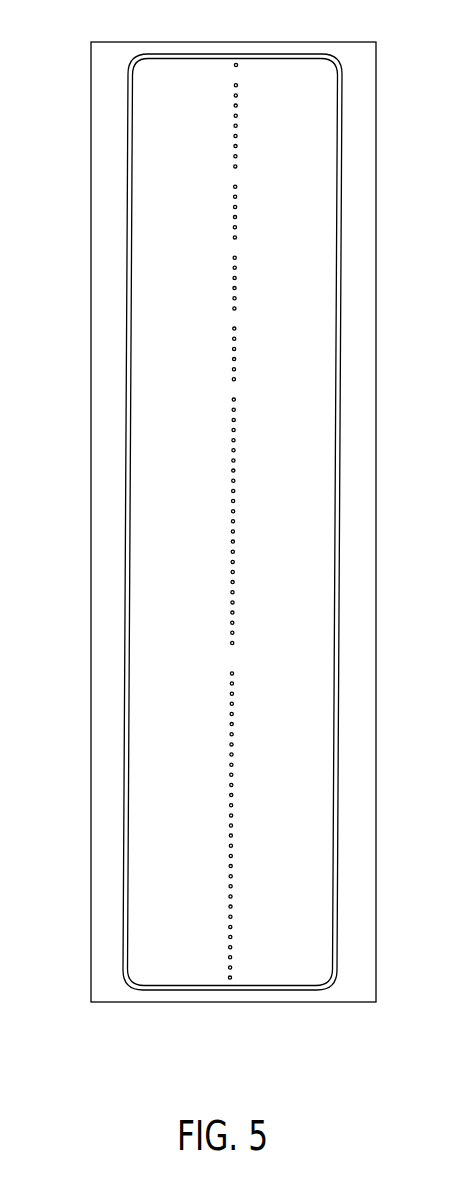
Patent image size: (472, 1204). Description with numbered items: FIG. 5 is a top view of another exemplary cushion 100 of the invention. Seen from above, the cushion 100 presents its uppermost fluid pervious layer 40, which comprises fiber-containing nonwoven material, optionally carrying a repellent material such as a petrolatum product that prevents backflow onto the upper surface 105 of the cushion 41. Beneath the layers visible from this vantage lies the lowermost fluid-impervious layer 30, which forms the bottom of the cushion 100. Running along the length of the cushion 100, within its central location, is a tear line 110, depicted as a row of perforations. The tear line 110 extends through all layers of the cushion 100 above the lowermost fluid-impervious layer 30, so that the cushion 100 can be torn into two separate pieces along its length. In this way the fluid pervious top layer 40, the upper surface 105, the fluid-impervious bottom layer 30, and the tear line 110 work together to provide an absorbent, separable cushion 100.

The cushion 100 is at (233, 522).
The lowermost fluid-impervious layer 30 is at (354, 757).
The uppermost fluid pervious layer 40 is at (173, 481).
The cushion 41 is at (162, 537).
The upper surface 105 is at (334, 521).
The tear line 110 is at (238, 195).